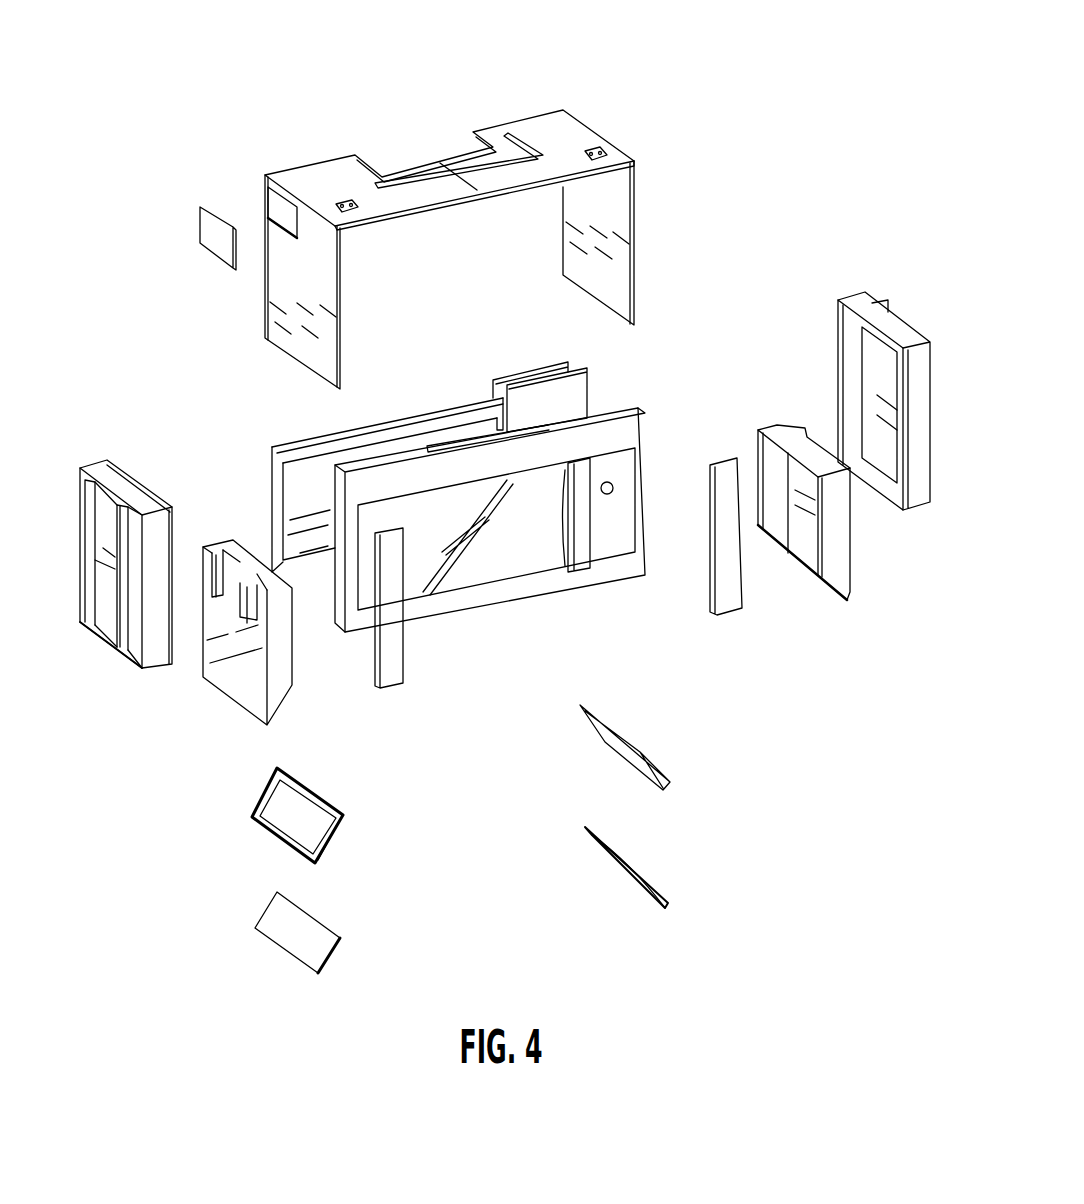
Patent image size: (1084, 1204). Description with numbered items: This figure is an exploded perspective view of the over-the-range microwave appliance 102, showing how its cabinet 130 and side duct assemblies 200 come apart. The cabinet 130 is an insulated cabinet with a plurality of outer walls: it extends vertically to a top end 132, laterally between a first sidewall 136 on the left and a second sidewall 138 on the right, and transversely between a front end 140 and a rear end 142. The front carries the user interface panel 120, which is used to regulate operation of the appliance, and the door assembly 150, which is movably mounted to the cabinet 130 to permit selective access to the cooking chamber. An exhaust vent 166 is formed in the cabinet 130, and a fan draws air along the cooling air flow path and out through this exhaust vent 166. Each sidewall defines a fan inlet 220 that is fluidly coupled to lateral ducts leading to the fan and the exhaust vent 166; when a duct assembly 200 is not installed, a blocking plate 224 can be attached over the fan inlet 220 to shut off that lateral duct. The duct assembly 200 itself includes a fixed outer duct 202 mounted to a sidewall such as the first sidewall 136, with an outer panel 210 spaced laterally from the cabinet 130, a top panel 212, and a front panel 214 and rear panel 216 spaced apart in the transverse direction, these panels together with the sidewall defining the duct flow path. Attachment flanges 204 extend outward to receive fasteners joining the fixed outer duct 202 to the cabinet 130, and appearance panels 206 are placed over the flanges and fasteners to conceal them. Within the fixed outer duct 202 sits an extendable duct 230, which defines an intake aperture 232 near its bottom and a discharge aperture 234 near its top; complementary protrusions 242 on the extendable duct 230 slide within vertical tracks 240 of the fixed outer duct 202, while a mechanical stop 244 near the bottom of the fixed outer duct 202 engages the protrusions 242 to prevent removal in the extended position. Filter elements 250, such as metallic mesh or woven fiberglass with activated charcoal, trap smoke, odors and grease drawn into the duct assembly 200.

The microwave appliance 102 is at (832, 142).
The user interface panel 120 is at (625, 481).
The cabinet 130 is at (598, 106).
The top end 132 is at (533, 137).
The first sidewall 136 is at (313, 258).
The second sidewall 138 is at (636, 228).
The front end 140 is at (470, 577).
The rear end 142 is at (424, 372).
The door assembly 150 is at (521, 455).
The exhaust vent 166 is at (418, 153).
The duct assembly 200 is at (949, 587).
The fixed outer duct 202 is at (918, 337).
The attachment flange 204 is at (127, 462).
The appearance panel 206 is at (400, 688).
The outer panel 210 is at (100, 530).
The top panel 212 is at (140, 502).
The front panel 214 is at (160, 540).
The rear panel 216 is at (851, 363).
The fan inlet 220 is at (266, 206).
The blocking plate 224 is at (208, 216).
The extendable duct 230 is at (233, 703).
The intake aperture 232 is at (807, 565).
The discharge aperture 234 is at (798, 442).
The vertical track 240 is at (84, 567).
The complementary protrusion 242 is at (206, 587).
The mechanical stop 244 is at (126, 652).
The filter element 250 is at (313, 947).